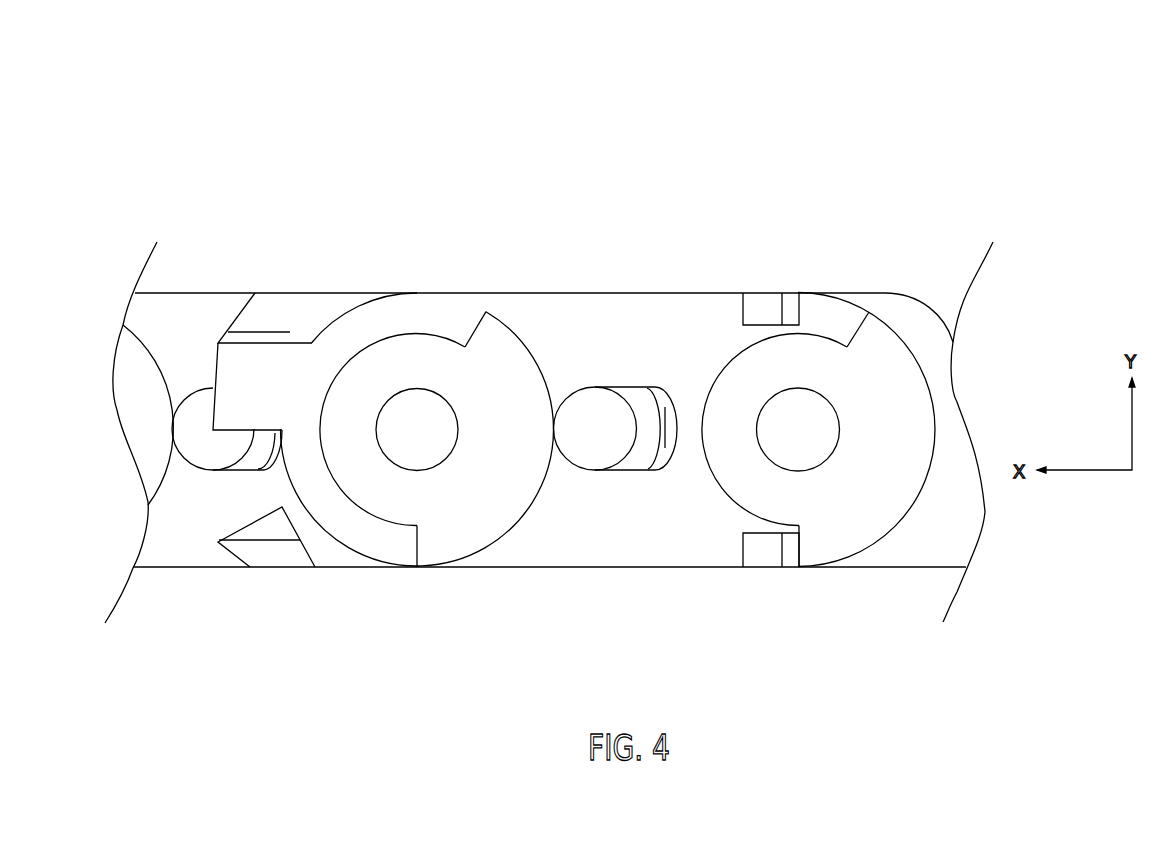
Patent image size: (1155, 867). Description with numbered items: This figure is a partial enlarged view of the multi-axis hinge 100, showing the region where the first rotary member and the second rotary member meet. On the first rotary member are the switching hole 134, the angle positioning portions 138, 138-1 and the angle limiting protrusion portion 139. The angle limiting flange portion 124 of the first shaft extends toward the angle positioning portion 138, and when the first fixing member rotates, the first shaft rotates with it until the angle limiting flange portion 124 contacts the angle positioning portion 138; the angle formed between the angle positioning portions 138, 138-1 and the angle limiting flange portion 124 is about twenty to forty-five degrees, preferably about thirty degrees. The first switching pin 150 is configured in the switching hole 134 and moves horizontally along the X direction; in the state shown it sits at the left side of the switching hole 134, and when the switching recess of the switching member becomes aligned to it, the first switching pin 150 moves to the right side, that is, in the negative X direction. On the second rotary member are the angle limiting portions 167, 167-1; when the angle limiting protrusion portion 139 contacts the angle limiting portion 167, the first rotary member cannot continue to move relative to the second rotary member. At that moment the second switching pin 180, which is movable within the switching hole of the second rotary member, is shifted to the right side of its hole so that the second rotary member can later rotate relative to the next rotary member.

The multi-axis hinge 100 is at (135, 81).
The angle limiting flange portion 124 is at (858, 327).
The switching hole 134 is at (627, 470).
The angle positioning portion 138 is at (760, 306).
The angle positioning portion 138-1 is at (763, 547).
The angle limiting protrusion portion 139 is at (284, 385).
The first switching pin 150 is at (593, 427).
The angle limiting portion 167 is at (275, 525).
The angle limiting portion 167-1 is at (273, 303).
The second switching pin 180 is at (195, 435).